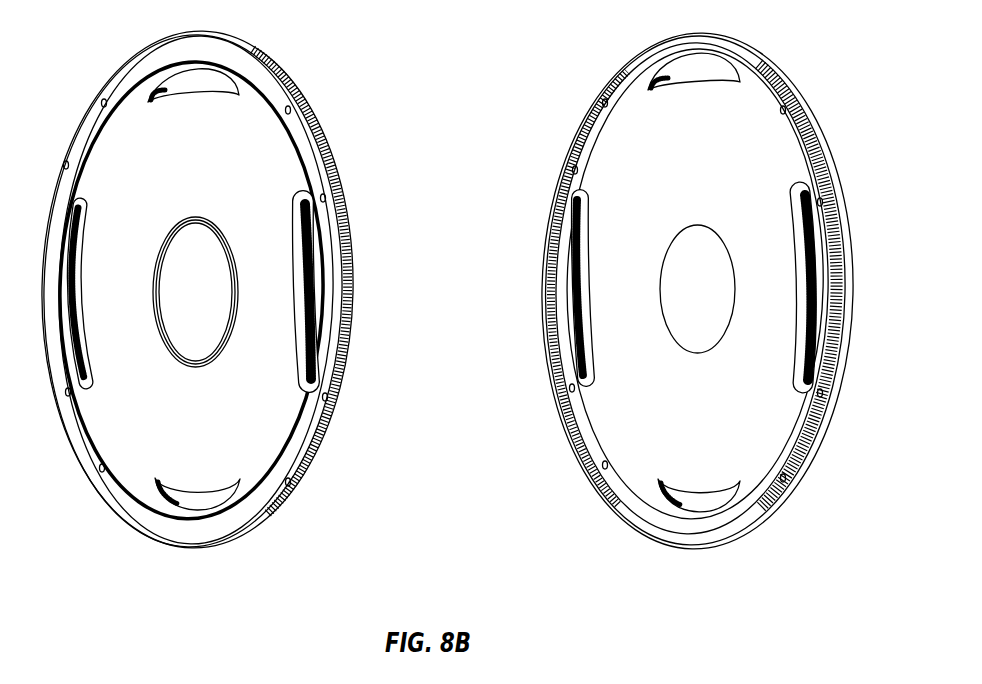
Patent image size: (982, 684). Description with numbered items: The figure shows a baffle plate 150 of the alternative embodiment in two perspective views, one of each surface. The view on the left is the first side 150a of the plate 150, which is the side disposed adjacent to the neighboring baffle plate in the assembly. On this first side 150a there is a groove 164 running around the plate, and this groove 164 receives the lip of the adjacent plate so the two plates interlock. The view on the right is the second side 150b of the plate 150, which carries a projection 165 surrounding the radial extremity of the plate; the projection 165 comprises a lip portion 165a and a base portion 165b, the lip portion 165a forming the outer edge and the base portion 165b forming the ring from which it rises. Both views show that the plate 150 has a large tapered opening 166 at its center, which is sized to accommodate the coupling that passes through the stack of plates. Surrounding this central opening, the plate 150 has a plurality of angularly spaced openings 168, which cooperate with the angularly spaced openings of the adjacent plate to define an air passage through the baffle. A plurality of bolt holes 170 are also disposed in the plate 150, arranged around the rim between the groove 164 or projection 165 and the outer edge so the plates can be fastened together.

The plate 150 is at (114, 28).
The first side 150a is at (221, 436).
The second side 150b is at (700, 276).
The groove 164 is at (290, 142).
The projection 165 is at (783, 75).
The lip portion 165a is at (653, 40).
The base portion 165b is at (705, 50).
The large tapered opening 166 is at (190, 348).
The angularly spaced openings 168 is at (203, 73).
The bolt holes 170 is at (294, 107).